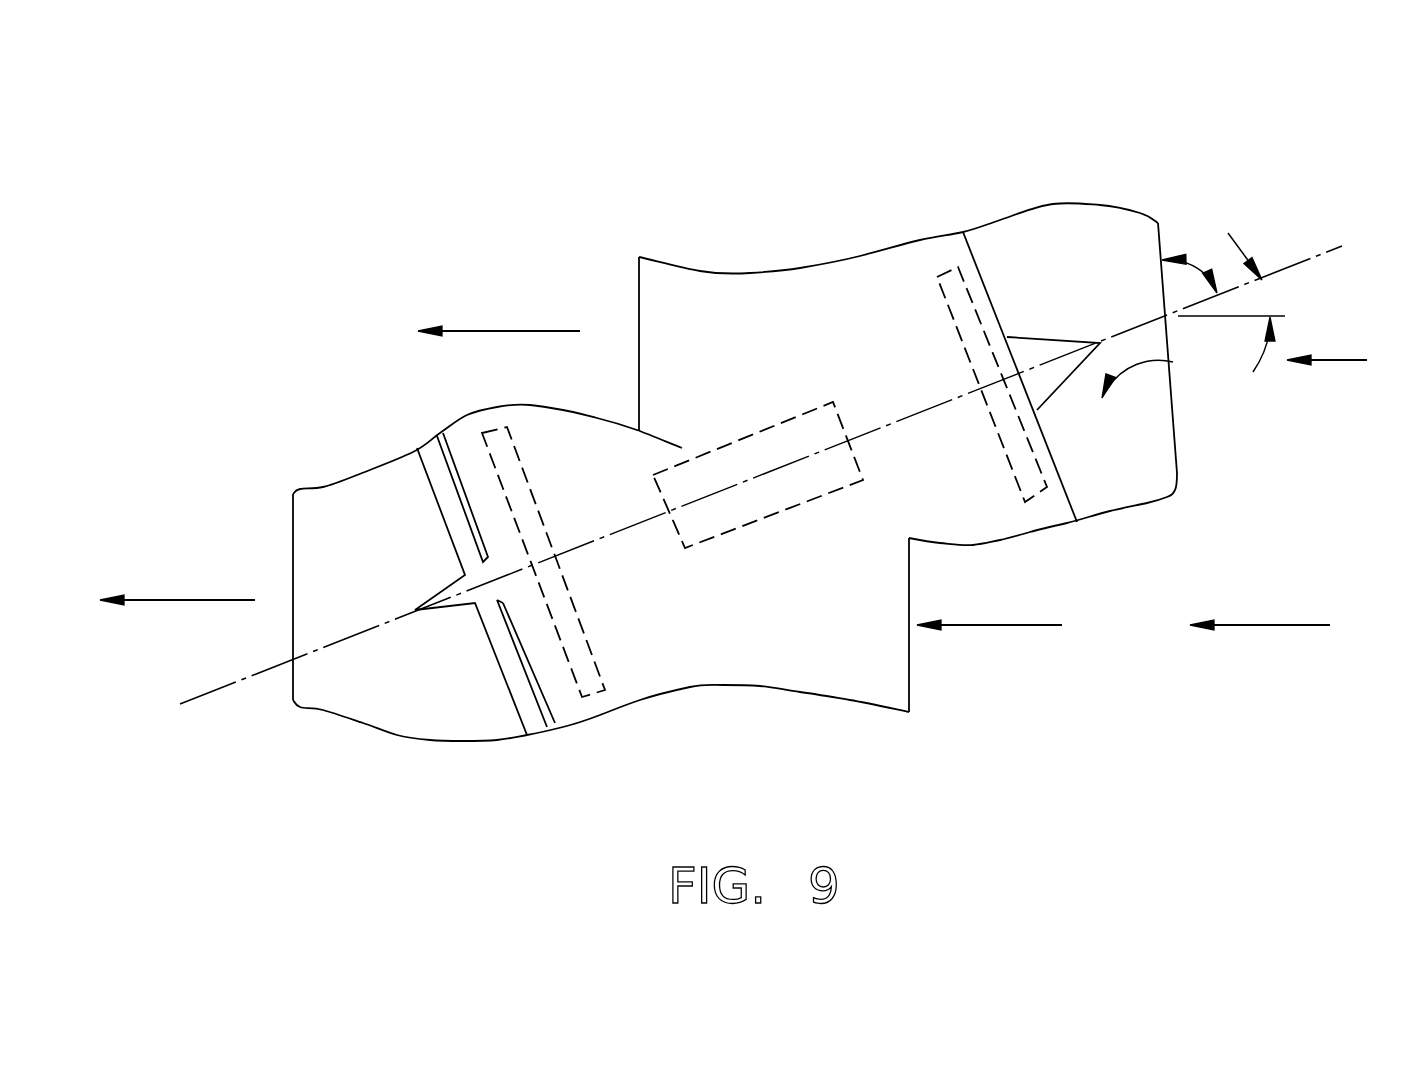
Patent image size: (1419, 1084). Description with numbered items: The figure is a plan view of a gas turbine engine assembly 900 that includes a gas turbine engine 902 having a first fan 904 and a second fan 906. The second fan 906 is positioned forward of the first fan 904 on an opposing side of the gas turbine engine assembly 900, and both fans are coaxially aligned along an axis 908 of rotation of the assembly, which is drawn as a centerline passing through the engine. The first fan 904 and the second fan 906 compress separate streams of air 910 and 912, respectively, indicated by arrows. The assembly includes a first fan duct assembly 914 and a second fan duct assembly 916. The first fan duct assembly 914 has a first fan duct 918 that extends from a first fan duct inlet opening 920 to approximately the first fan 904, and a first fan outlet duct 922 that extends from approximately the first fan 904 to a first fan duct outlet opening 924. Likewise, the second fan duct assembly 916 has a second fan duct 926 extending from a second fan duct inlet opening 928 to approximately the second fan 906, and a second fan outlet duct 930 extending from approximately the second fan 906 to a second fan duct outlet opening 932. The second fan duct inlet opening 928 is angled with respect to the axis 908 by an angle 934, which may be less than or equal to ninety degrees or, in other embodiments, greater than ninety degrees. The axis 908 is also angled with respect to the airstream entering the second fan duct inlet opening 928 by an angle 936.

The gas turbine engine assembly 900 is at (556, 131).
The gas turbine engine 902 is at (753, 508).
The first fan 904 is at (590, 692).
The second fan 906 is at (1033, 492).
The axis 908 is at (1303, 258).
The stream of air 910 is at (1003, 625).
The stream of air 912 is at (1130, 372).
The first fan duct assembly 914 is at (728, 730).
The second fan duct assembly 916 is at (945, 200).
The first fan duct 918 is at (800, 692).
The first fan duct inlet opening 920 is at (913, 688).
The first fan outlet duct 922 is at (417, 742).
The first fan duct outlet opening 924 is at (293, 685).
The second fan duct 926 is at (1055, 203).
The second fan duct inlet opening 928 is at (1162, 238).
The second fan outlet duct 930 is at (817, 267).
The second fan duct outlet opening 932 is at (638, 270).
The angle 934 is at (1197, 262).
The angle 936 is at (1262, 352).